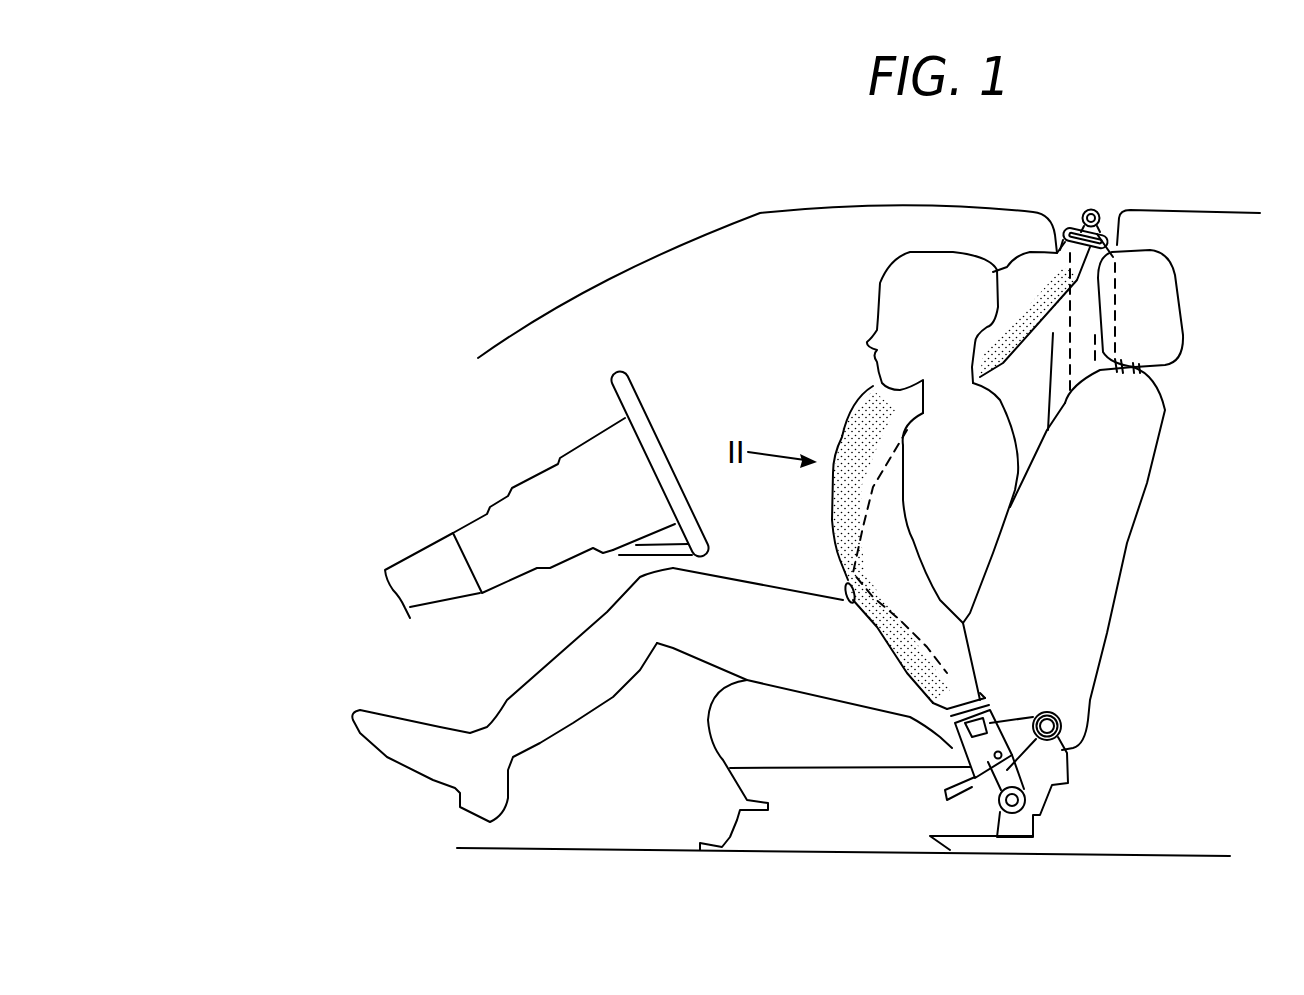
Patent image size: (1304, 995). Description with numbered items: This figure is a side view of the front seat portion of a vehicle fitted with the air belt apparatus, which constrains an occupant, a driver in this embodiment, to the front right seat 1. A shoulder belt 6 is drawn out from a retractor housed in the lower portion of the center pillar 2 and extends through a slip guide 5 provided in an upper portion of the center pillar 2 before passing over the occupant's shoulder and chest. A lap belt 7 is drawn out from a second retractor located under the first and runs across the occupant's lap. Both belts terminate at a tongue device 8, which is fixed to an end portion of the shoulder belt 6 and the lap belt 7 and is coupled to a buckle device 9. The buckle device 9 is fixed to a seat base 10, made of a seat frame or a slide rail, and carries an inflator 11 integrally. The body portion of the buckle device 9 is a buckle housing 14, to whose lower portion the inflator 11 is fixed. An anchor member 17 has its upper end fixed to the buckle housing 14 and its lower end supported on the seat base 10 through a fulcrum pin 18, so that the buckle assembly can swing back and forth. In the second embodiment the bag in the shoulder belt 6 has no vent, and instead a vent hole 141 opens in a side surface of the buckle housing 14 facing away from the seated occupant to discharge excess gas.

The front right seat 1 is at (1130, 566).
The center pillar 2 is at (1053, 363).
The slip guide 5 is at (1120, 236).
The shoulder belt 6 is at (832, 518).
The lap belt 7 is at (847, 607).
The tongue device 8 is at (991, 698).
The buckle device 9 is at (945, 752).
The seat base 10 is at (1040, 800).
The inflator 11 is at (953, 797).
The buckle housing 14 is at (945, 712).
The vent hole 141 is at (1007, 750).
The anchor member 17 is at (1007, 770).
The fulcrum pin 18 is at (1012, 813).